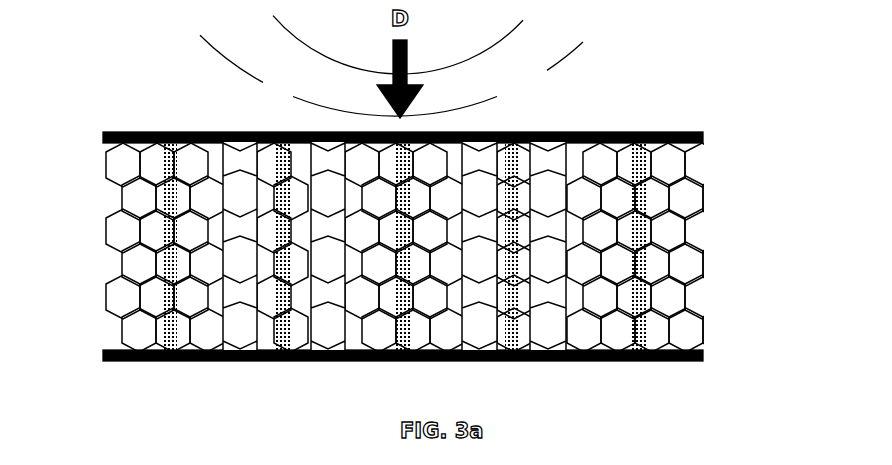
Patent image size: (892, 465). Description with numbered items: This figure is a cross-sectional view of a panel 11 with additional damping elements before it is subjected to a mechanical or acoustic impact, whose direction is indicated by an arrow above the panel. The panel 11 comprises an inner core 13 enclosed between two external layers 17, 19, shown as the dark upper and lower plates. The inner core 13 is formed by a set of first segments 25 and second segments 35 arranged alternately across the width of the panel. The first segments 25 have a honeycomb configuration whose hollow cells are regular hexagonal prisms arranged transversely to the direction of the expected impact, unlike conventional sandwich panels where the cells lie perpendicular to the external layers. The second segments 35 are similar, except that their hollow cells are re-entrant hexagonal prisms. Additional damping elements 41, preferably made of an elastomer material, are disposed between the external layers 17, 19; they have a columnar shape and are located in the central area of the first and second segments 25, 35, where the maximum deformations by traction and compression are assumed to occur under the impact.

The panel 11 is at (102, 115).
The inner core 13 is at (438, 211).
The external layer 17 is at (705, 135).
The external layer 19 is at (705, 355).
The first segments 25 is at (197, 362).
The second segments 35 is at (305, 362).
The additional damping elements 41 is at (174, 132).